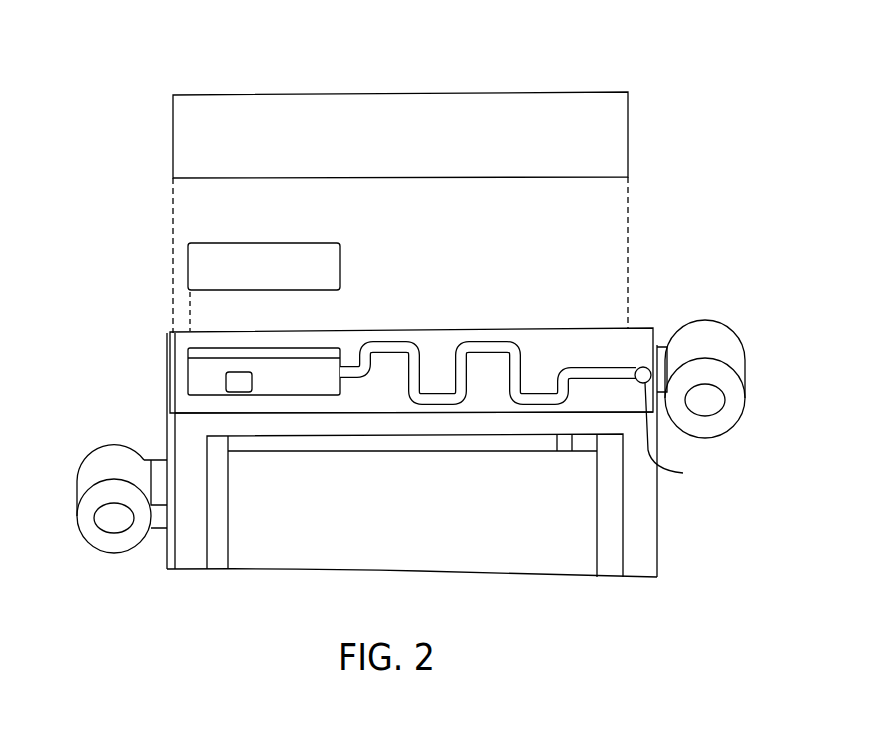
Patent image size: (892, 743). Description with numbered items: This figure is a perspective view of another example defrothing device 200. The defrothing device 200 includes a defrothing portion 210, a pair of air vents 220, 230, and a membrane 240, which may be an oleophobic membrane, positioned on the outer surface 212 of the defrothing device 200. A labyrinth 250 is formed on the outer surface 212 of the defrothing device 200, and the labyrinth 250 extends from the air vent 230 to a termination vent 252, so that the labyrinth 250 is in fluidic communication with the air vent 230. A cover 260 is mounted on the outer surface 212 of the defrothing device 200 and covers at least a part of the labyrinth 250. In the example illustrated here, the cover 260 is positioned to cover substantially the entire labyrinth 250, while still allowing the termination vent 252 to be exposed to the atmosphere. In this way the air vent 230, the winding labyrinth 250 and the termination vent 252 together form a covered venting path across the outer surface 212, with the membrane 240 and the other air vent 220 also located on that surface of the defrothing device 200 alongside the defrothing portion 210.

The defrothing device 200 is at (716, 184).
The defrothing portion 210 is at (192, 552).
The outer surface 212 is at (578, 343).
The air vent 220 is at (563, 443).
The air vent 230 is at (265, 384).
The membrane 240 is at (295, 256).
The labyrinth 250 is at (493, 346).
The termination vent 252 is at (706, 430).
The cover 260 is at (415, 110).